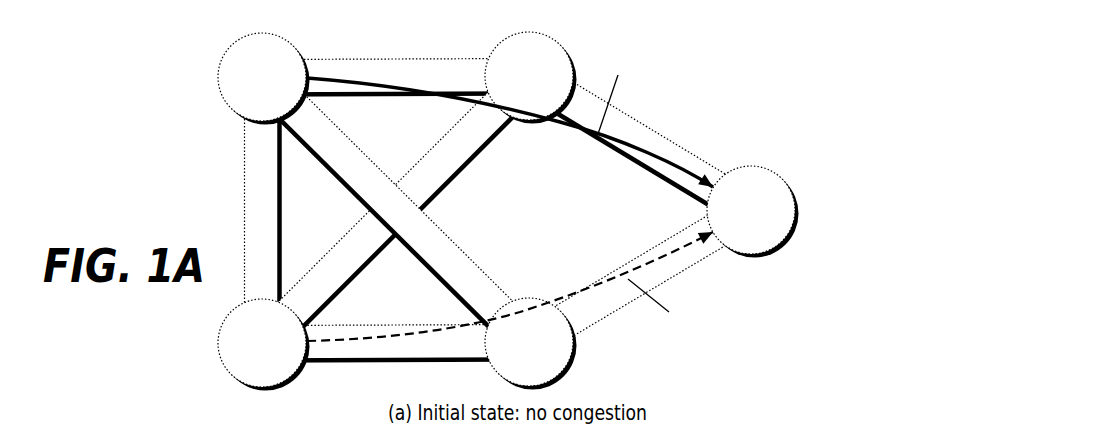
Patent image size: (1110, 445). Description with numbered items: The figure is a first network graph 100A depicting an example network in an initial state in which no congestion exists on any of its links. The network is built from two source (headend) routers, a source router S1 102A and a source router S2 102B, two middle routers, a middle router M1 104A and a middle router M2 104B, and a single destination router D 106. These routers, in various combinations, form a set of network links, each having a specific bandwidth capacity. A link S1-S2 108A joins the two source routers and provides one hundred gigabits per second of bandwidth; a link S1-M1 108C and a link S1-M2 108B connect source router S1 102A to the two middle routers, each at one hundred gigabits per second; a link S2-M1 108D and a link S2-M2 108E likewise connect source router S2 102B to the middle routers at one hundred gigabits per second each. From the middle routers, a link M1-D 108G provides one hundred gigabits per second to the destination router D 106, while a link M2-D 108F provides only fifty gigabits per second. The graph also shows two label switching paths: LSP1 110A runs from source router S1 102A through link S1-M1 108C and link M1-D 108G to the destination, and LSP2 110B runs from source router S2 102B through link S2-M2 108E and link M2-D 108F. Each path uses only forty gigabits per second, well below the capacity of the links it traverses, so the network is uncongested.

The first network graph 100A is at (782, 40).
The source router S1 102A is at (287, 104).
The source router S2 102B is at (287, 370).
The middle router M1 104A is at (554, 103).
The middle router M2 104B is at (554, 369).
The destination router D 106 is at (733, 237).
The link S1-S2 108A is at (244, 170).
The link S1-M2 108B is at (324, 164).
The link S1-M1 108C is at (359, 60).
The link S2-M1 108D is at (446, 134).
The link S2-M2 108E is at (388, 325).
The link M2-D 108F is at (632, 264).
The link M1-D 108G is at (719, 166).
The LSP1 110A is at (573, 133).
The LSP2 110B is at (573, 293).